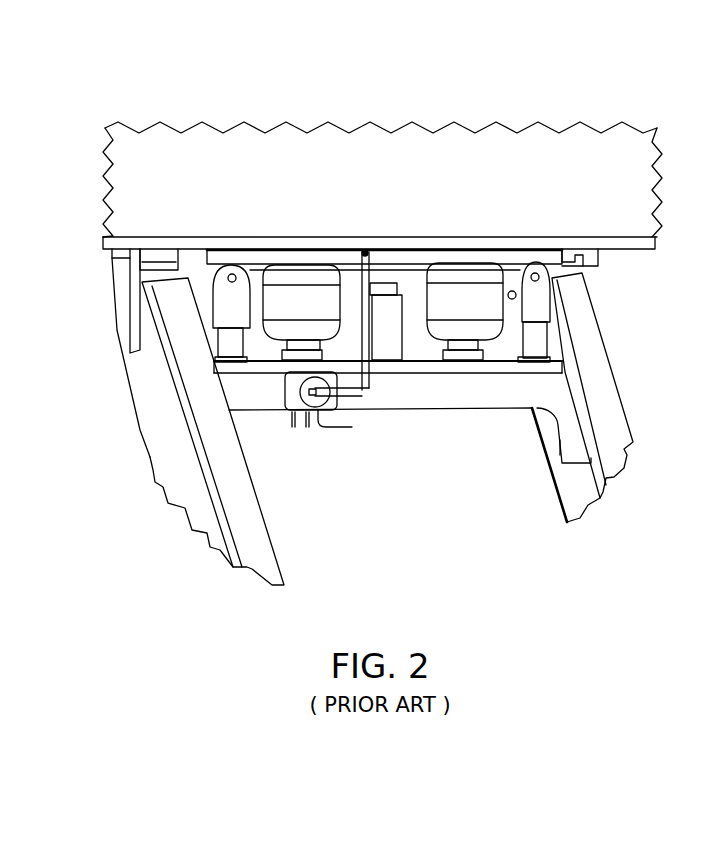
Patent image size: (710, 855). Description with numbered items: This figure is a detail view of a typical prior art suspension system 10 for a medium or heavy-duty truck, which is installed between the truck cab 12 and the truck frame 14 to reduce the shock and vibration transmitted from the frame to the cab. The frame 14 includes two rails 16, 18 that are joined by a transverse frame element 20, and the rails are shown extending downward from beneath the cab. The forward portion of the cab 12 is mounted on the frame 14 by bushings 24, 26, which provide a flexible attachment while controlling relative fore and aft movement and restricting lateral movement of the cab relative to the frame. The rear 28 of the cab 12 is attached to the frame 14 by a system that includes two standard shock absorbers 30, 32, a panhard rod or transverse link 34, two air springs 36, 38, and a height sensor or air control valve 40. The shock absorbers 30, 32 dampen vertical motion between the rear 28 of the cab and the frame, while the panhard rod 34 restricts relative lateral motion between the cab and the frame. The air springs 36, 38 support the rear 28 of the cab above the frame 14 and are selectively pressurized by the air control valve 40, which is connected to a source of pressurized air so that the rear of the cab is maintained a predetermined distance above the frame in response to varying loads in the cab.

The suspension system 10 is at (540, 525).
The truck cab 12 is at (278, 142).
The truck frame 14 is at (150, 457).
The rail 16 is at (133, 398).
The rail 18 is at (256, 574).
The transverse frame element 20 is at (484, 411).
The bushing 24 is at (137, 258).
The bushing 26 is at (588, 258).
The rear of the cab 28 is at (532, 200).
The shock absorber 30 is at (217, 300).
The shock absorber 32 is at (538, 307).
The panhard rod 34 is at (410, 292).
The air spring 36 is at (288, 315).
The air spring 38 is at (451, 313).
The air control valve 40 is at (300, 413).